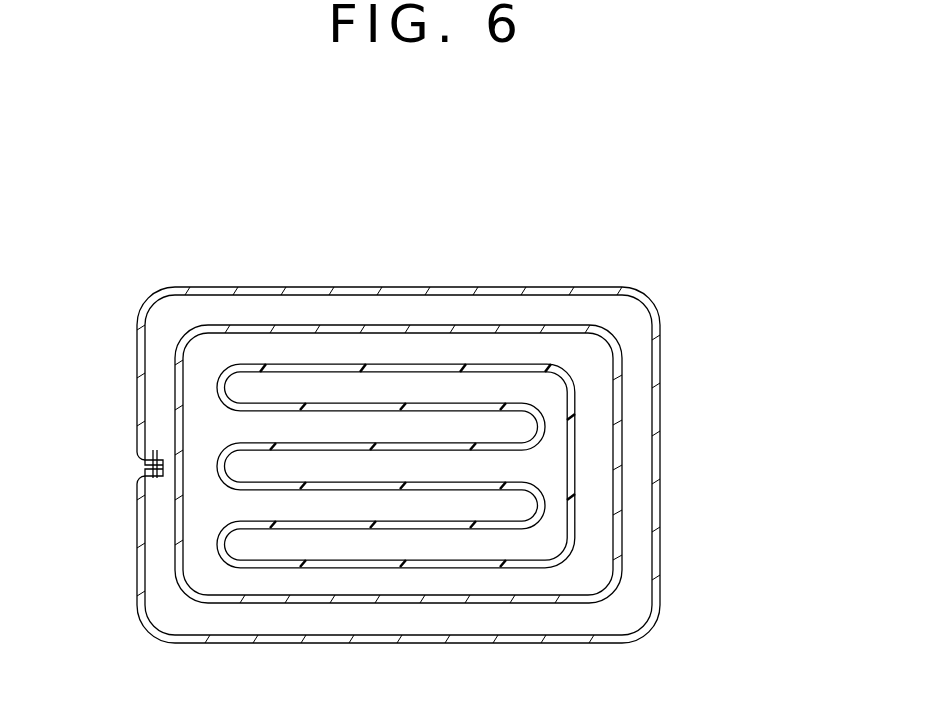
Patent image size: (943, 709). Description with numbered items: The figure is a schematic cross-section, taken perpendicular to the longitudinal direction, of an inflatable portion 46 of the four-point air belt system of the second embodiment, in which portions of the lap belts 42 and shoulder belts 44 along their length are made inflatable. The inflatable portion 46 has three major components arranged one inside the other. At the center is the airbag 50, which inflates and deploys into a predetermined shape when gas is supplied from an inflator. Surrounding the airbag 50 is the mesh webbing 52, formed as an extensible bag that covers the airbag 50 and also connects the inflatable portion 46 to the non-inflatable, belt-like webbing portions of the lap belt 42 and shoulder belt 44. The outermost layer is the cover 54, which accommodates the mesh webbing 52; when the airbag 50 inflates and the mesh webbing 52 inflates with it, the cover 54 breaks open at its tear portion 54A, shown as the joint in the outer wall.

The inflatable portion 46 is at (566, 261).
The lap belt 42 is at (424, 465).
The shoulder belt 44 is at (424, 465).
The airbag 50 is at (578, 417).
The mesh webbing 52 is at (625, 477).
The cover 54 is at (662, 519).
The tear portion 54A is at (140, 468).